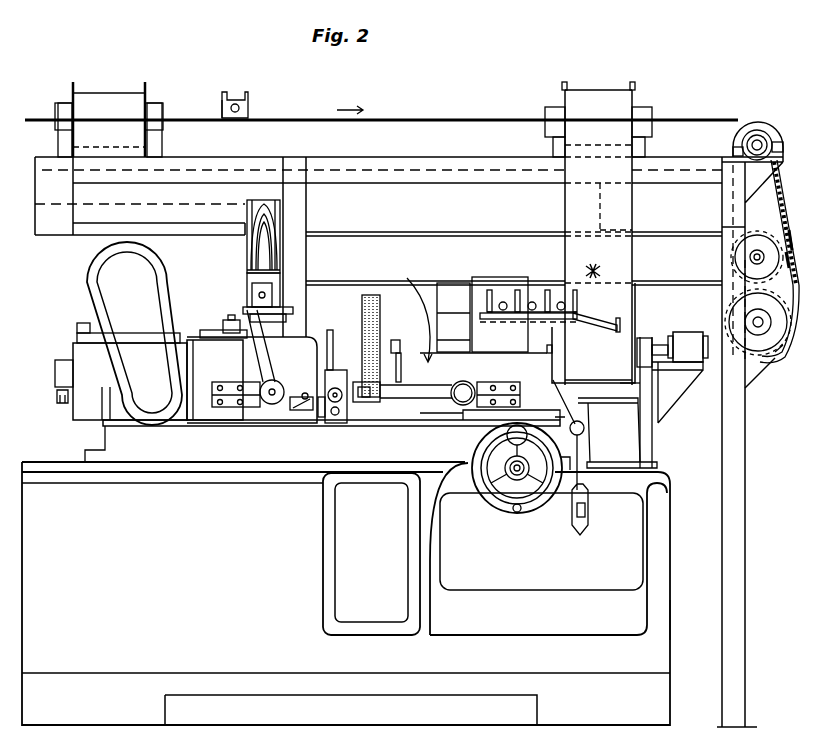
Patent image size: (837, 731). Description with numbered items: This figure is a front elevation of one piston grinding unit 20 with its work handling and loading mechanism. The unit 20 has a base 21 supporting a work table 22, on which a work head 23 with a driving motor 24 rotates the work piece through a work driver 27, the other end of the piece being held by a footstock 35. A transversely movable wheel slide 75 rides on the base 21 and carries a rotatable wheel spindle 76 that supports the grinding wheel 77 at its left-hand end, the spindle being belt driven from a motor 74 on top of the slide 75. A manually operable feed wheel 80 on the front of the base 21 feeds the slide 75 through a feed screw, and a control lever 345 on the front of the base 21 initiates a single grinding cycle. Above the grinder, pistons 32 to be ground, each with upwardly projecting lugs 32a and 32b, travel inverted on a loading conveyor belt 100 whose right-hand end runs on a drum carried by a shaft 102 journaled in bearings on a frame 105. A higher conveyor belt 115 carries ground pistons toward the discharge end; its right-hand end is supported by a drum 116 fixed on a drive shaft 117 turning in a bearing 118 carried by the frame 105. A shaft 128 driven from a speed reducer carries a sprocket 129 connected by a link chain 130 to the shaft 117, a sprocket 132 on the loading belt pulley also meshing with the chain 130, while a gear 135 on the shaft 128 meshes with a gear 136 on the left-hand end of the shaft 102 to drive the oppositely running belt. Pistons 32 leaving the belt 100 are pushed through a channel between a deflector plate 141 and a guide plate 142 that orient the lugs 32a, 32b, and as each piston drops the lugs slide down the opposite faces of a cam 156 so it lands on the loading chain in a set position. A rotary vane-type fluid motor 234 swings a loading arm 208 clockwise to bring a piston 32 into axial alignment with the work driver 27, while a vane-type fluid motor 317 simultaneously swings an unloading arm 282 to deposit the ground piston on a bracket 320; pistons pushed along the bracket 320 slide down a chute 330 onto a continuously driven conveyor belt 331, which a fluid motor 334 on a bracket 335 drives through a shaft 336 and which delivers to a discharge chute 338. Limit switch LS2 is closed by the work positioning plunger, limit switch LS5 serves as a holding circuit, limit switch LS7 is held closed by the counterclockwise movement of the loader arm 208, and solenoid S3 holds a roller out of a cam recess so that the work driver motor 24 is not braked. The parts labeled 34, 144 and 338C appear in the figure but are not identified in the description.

The piston grinding unit 20 is at (678, 540).
The base 21 is at (657, 620).
The work table 22 is at (205, 448).
The work head 23 is at (177, 342).
The driving motor 24 is at (90, 293).
The work driver 27 is at (329, 352).
The piston 32 is at (222, 102).
The lug 32a is at (245, 92).
The lug 32b is at (222, 87).
The beam 34 is at (466, 231).
The footstock 35 is at (441, 379).
The motor 74 is at (452, 300).
The wheel slide 75 is at (412, 311).
The wheel spindle 76 is at (398, 353).
The grinding wheel 77 is at (370, 295).
The feed wheel 80 is at (503, 505).
The conveyor belt 100 is at (422, 232).
The shaft 102 is at (750, 262).
The frame 105 is at (748, 497).
The conveyor belt 115 is at (413, 120).
The drum 116 is at (738, 130).
The drive shaft 117 is at (760, 135).
The bearing 118 is at (777, 143).
The shaft 128 is at (770, 315).
The sprocket 129 is at (777, 343).
The link chain 130 is at (785, 198).
The sprocket 132 is at (787, 233).
The gear 135 is at (767, 367).
The gear 136 is at (790, 260).
The deflector plate 141 is at (80, 214).
The guide plate 142 is at (88, 228).
The switch housing 144 is at (236, 280).
The cam 156 is at (262, 228).
The loading arm 208 is at (258, 357).
The rotary vane-type fluid motor 234 is at (263, 380).
The unloading arm 282 is at (410, 393).
The vane-type fluid motor 317 is at (487, 386).
The bracket 320 is at (500, 320).
The chute 330 is at (602, 330).
The conveyor belt 331 is at (600, 261).
The fluid motor 334 is at (688, 340).
The bracket 335 is at (675, 393).
The shaft 336 is at (647, 340).
The chute 338 is at (565, 84).
The spool 338C is at (110, 101).
The control lever 345 is at (584, 428).
The limit switch LS2 is at (326, 415).
The limit switch LS5 is at (305, 412).
The limit switch LS7 is at (229, 322).
The solenoid S3 is at (55, 372).